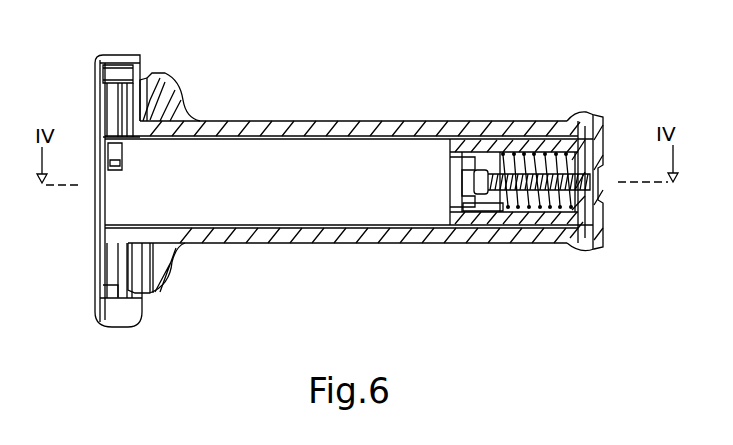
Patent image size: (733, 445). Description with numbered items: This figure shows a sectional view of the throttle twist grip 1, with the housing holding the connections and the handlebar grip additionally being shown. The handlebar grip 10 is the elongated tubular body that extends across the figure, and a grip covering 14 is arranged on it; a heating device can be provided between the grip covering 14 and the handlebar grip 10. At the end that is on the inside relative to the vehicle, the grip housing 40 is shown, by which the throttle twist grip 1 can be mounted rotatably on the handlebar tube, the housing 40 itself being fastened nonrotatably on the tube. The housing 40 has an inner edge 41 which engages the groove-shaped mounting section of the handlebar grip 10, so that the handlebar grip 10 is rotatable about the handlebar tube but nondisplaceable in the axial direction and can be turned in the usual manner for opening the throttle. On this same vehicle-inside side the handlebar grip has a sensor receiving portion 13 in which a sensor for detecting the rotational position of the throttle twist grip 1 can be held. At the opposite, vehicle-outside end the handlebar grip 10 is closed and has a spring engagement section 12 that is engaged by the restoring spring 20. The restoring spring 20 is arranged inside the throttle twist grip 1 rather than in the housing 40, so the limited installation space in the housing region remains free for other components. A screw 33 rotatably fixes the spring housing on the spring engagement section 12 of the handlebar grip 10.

The throttle twist grip 1 is at (428, 80).
The handlebar grip 10 is at (405, 238).
The spring engagement section 12 is at (594, 112).
The sensor receiving portion 13 is at (135, 298).
The grip covering 14 is at (322, 240).
The restoring spring 20 is at (540, 165).
The screw 33 is at (510, 205).
The grip housing 40 is at (118, 308).
The inner edge 41 is at (145, 108).